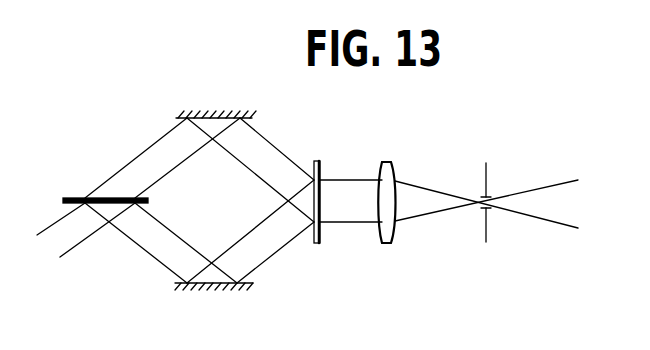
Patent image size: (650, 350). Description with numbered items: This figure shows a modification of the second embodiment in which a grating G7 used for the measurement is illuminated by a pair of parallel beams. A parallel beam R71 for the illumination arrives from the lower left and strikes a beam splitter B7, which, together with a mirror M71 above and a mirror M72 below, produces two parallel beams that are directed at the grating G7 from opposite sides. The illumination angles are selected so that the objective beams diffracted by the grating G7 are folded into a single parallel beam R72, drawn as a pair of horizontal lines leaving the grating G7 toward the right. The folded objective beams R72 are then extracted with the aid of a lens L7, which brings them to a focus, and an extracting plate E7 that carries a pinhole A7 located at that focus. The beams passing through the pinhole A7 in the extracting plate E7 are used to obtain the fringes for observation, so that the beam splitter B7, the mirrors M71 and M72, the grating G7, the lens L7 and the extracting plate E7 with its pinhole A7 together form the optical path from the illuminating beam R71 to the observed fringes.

The beam splitter B7 is at (71, 197).
The parallel beam for the illumination R71 is at (84, 239).
The mirror M71 is at (217, 117).
The mirror M72 is at (212, 285).
The grating G7 is at (318, 243).
The parallel beam R72 is at (348, 179).
The lens L7 is at (391, 244).
The extracting plate E7 is at (485, 228).
The pinhole A7 is at (488, 199).